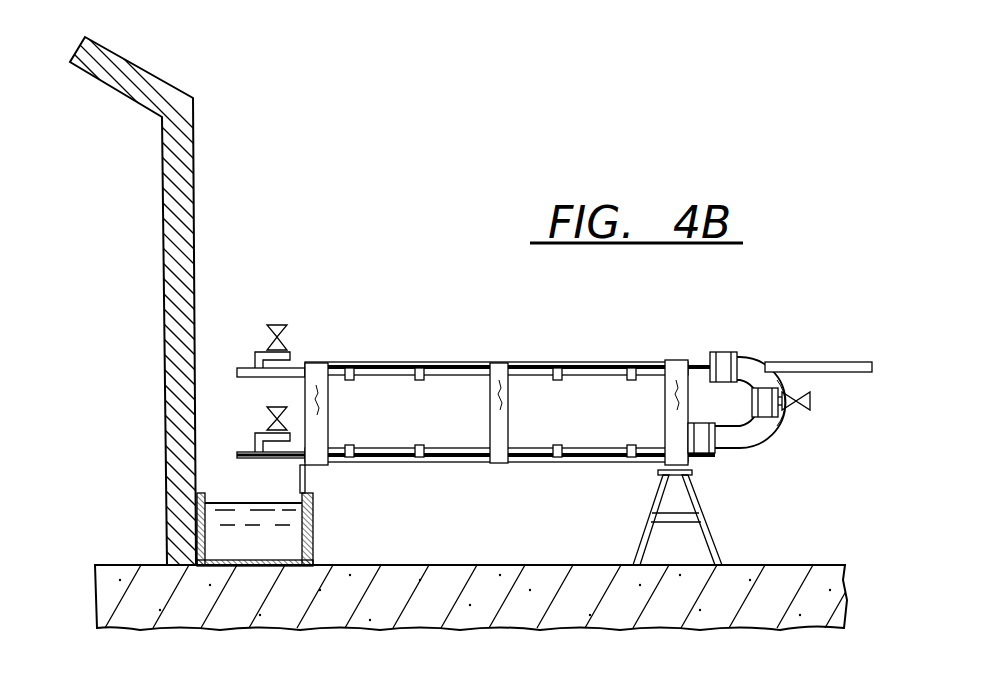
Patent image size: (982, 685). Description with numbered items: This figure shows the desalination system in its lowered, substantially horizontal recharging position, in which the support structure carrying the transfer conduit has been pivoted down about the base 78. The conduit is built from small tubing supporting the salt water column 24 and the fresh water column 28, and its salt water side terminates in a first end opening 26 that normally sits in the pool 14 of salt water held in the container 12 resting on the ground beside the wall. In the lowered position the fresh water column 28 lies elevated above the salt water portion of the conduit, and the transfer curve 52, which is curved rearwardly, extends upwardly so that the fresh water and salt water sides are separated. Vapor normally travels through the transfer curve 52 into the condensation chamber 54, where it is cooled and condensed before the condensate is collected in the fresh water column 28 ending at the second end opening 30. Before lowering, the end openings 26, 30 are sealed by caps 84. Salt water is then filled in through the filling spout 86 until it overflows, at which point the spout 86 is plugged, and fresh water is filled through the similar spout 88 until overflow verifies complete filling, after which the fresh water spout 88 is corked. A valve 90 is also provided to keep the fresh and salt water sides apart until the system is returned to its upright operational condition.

The container 12 is at (313, 530).
The pool of salt water 14 is at (215, 538).
The salt water column 24 is at (573, 462).
The first end opening 26 is at (232, 460).
The fresh water column 28 is at (543, 362).
The second end opening 30 is at (237, 370).
The transfer curve 52 is at (740, 445).
The condensation chamber 54 is at (817, 362).
The base 78 is at (310, 472).
The caps 84 is at (237, 453).
The filling spout 86 is at (275, 403).
The spout 88 is at (290, 357).
The valve 90 is at (810, 406).